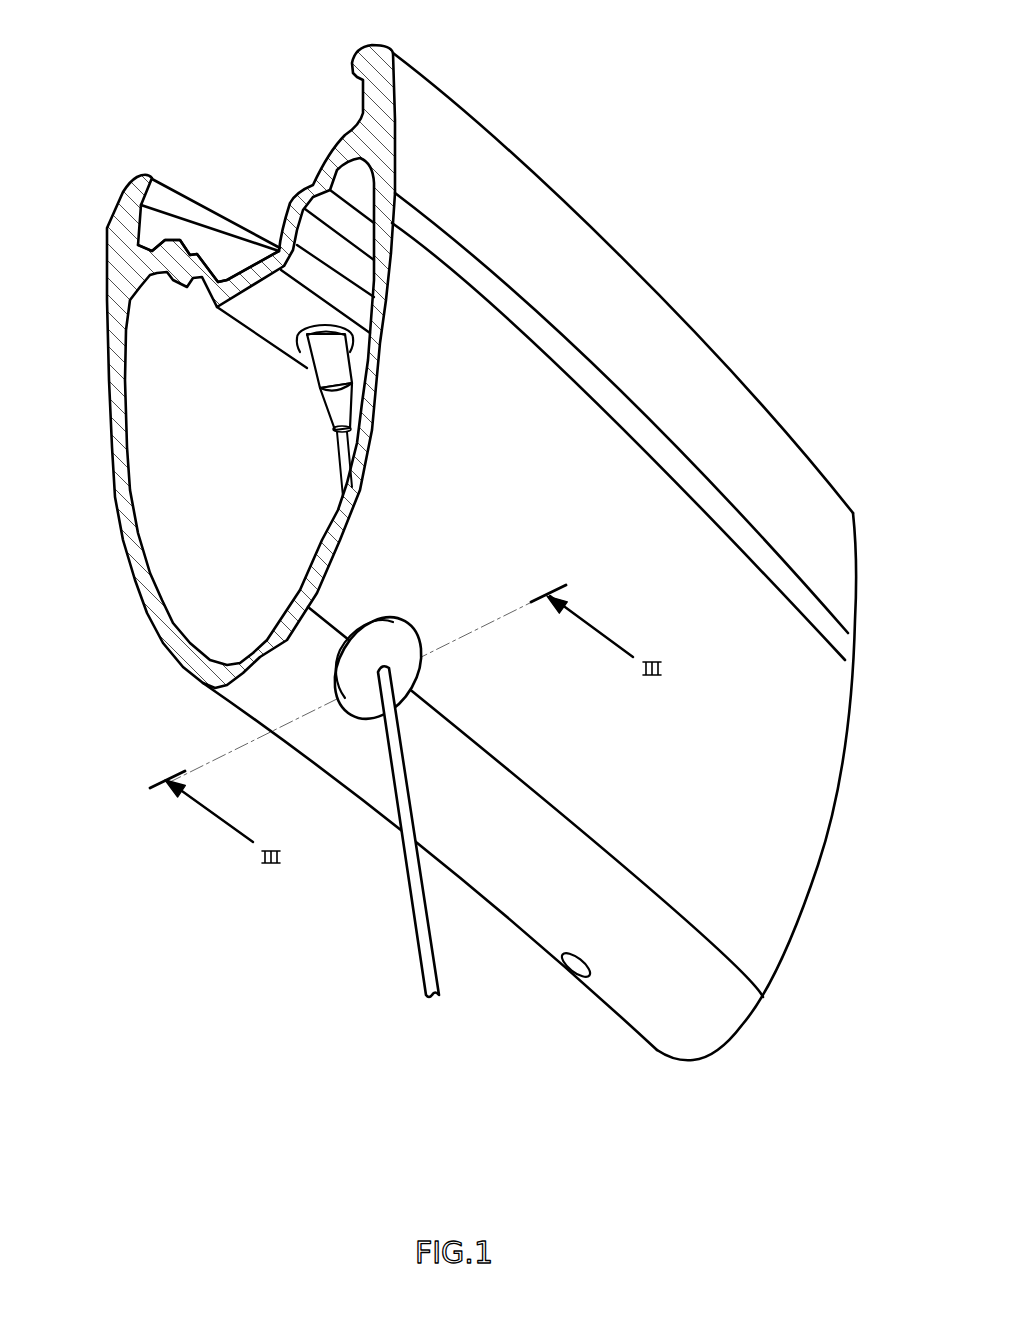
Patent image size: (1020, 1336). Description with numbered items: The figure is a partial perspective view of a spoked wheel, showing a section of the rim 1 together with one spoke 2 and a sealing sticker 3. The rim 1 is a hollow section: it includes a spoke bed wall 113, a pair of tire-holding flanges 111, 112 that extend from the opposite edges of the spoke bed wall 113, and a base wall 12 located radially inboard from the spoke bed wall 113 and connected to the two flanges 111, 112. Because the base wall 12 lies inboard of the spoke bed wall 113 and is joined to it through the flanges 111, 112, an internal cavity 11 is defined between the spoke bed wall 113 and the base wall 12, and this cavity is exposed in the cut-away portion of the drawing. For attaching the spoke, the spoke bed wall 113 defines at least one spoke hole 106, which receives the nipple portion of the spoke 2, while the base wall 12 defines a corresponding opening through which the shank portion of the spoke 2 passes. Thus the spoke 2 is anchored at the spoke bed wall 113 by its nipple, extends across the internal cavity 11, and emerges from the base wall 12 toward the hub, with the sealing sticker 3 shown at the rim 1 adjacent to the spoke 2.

The rim 1 is at (694, 228).
The internal cavity 11 is at (178, 532).
The base wall 12 is at (158, 622).
The tire-holding flange 111 is at (115, 242).
The tire-holding flange 112 is at (382, 108).
The spoke bed wall 113 is at (250, 285).
The spoke hole 106 is at (300, 356).
The spoke 2 is at (423, 960).
The sealing sticker 3 is at (360, 710).